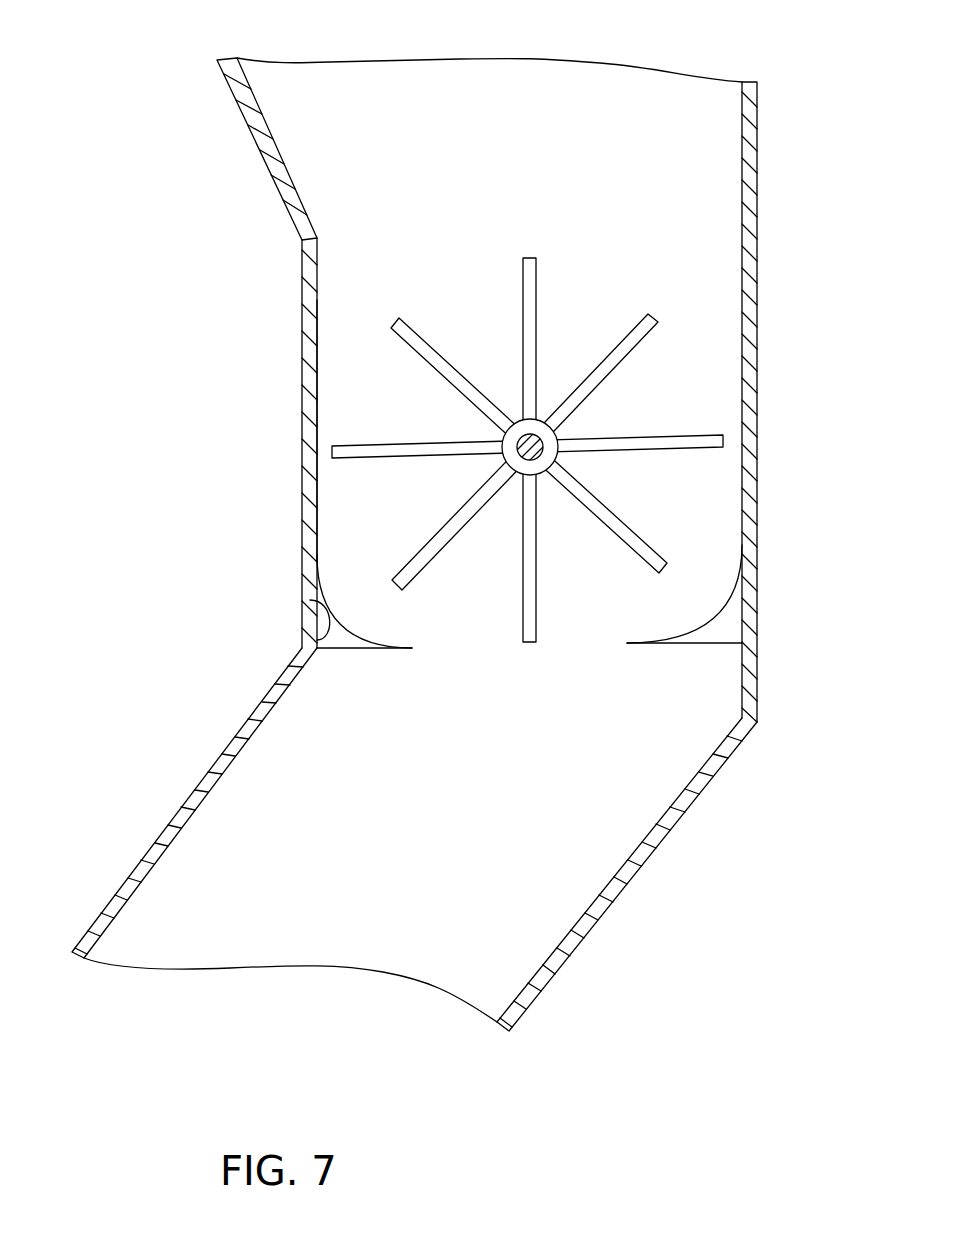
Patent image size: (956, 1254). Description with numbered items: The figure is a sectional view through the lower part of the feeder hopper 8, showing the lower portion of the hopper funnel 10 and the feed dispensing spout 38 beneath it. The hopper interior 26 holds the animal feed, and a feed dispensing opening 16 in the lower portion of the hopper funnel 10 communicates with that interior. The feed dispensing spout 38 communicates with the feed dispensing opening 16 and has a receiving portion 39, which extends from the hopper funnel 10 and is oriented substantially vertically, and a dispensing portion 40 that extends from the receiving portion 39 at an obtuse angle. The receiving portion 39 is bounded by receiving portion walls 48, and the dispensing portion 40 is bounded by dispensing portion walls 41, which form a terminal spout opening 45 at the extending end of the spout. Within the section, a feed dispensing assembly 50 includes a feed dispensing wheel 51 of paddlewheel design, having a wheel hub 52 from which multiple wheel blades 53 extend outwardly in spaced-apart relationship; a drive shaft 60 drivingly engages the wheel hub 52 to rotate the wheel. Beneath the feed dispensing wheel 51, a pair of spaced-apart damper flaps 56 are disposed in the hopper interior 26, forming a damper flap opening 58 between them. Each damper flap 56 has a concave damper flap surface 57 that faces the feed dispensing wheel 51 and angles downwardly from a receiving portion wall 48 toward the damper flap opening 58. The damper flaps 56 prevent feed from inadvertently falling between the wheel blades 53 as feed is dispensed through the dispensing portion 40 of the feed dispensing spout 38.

The feeder hopper 8 is at (175, 185).
The hopper funnel 10 is at (268, 198).
The feed dispensing opening 16 is at (312, 600).
The hopper interior 26 is at (360, 110).
The feed dispensing spout 38 is at (286, 357).
The receiving portion 39 is at (290, 442).
The dispensing portion 40 is at (241, 709).
The dispensing portion walls 41 is at (183, 797).
The terminal spout opening 45 is at (238, 937).
The receiving portion walls 48 is at (302, 510).
The feed dispensing assembly 50 is at (527, 397).
The feed dispensing wheel 51 is at (552, 290).
The wheel hub 52 is at (501, 438).
The wheel blades 53 is at (522, 296).
The damper flaps 56 is at (388, 660).
The damper flap surface 57 is at (338, 605).
The damper flap opening 58 is at (472, 600).
The drive shaft 60 is at (543, 441).